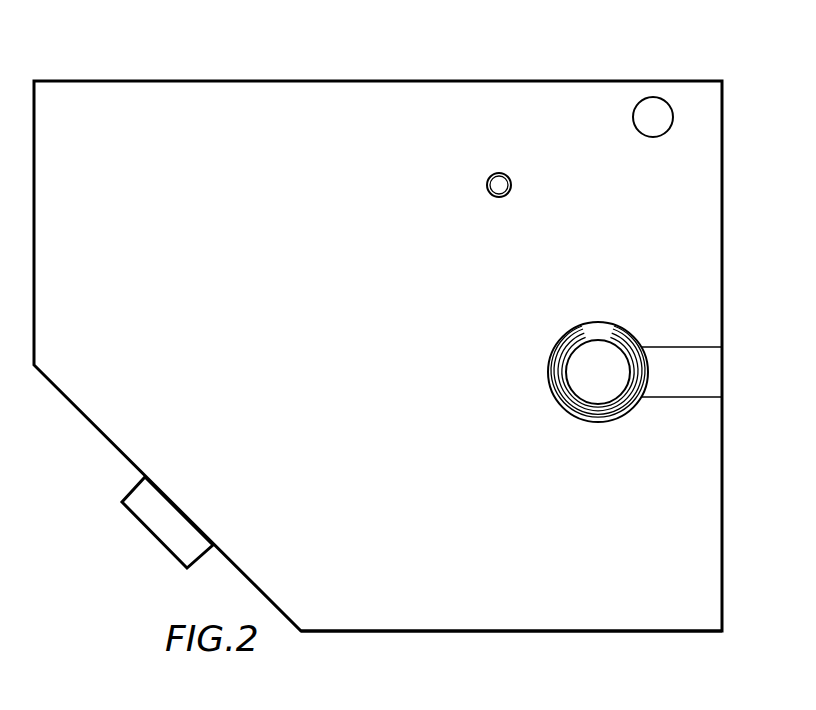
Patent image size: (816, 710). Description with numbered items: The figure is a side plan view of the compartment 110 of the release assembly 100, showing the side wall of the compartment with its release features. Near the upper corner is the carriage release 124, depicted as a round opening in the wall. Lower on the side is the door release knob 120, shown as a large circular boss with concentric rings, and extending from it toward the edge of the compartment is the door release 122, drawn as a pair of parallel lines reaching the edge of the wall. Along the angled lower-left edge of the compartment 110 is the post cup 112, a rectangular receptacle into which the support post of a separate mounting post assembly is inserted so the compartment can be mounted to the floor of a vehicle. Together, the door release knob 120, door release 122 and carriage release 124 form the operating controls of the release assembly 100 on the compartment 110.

The release assembly 100 is at (230, 53).
The compartment 110 is at (362, 632).
The post cup 112 is at (142, 512).
The door release knob 120 is at (592, 396).
The door release 122 is at (710, 353).
The carriage release 124 is at (652, 99).